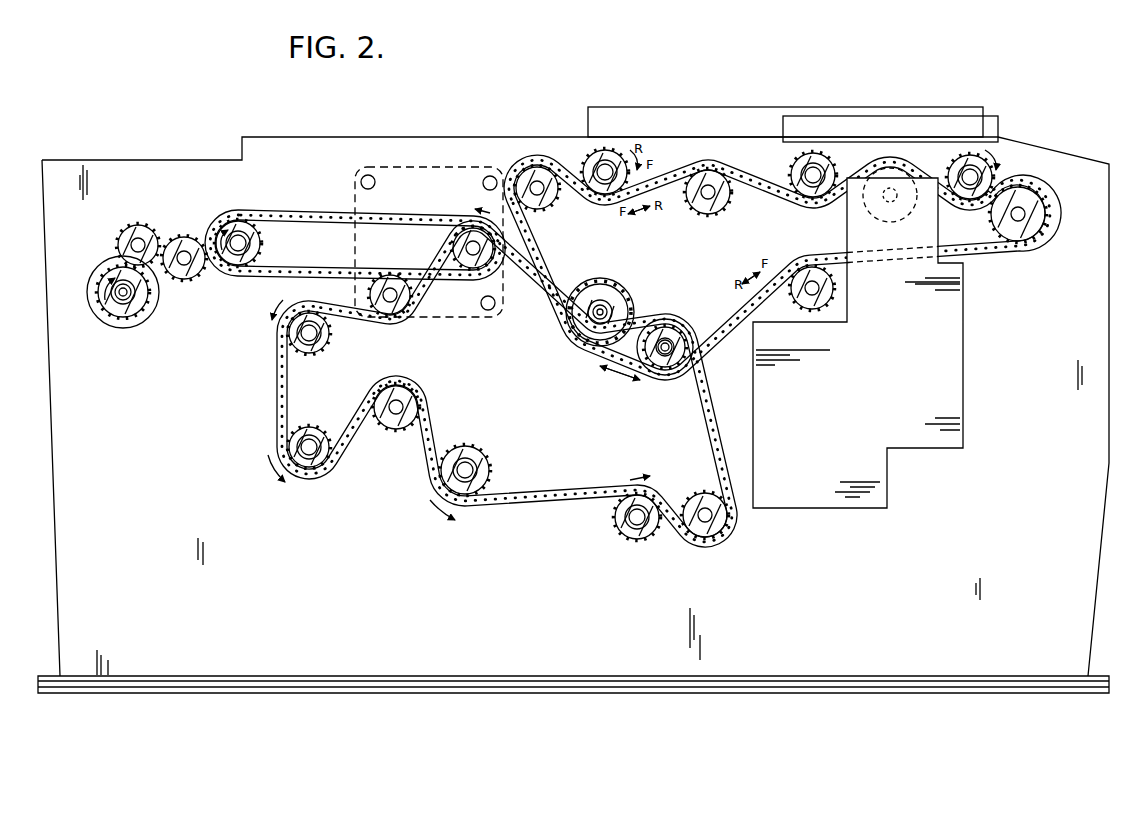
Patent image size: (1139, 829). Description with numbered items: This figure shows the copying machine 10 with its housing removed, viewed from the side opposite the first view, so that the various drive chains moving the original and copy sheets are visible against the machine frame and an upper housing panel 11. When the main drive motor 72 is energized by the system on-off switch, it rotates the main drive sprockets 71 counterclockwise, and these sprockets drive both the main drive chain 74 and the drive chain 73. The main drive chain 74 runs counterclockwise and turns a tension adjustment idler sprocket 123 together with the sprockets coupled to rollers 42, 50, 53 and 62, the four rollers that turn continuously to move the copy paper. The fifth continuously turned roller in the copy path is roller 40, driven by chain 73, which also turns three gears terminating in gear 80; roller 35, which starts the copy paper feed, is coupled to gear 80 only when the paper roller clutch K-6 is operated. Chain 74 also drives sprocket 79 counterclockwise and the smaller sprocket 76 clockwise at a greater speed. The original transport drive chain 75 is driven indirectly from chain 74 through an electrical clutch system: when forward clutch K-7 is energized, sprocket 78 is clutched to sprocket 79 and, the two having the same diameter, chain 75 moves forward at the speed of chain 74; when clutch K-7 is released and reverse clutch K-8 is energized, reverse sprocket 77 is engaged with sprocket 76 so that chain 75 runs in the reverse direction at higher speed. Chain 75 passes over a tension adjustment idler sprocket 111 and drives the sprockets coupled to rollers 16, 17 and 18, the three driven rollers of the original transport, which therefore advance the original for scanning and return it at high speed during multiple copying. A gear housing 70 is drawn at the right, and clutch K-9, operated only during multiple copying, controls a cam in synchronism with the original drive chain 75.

The machine frame 10 is at (160, 95).
The housing 11 is at (712, 107).
The roller 16 is at (591, 160).
The roller 17 is at (806, 167).
The roller 18 is at (990, 165).
The roller 35 is at (123, 297).
The roller 40 is at (241, 241).
The roller 42 is at (330, 336).
The roller 50 is at (314, 428).
The roller 53 is at (484, 460).
The roller 62 is at (630, 531).
The gear housing 70 is at (966, 384).
The main drive sprocket 71 is at (472, 268).
The main drive motor 72 is at (388, 180).
The drive chain 73 is at (330, 218).
The main drive chain 74 is at (277, 397).
The original transport drive chain 75 is at (542, 238).
The sprocket 76 is at (612, 292).
The reverse sprocket 77 is at (596, 304).
The sprocket 78 is at (658, 373).
The sprocket 79 is at (670, 335).
The gear 80 is at (145, 308).
The tension adjustment idler sprocket 111 is at (832, 290).
The tension adjustment idler sprocket 123 is at (388, 318).
The paper roller clutch K-6 is at (92, 316).
The forward clutch K-7 is at (656, 326).
The reverse clutch K-8 is at (626, 300).
The clutch K-9 is at (1052, 240).